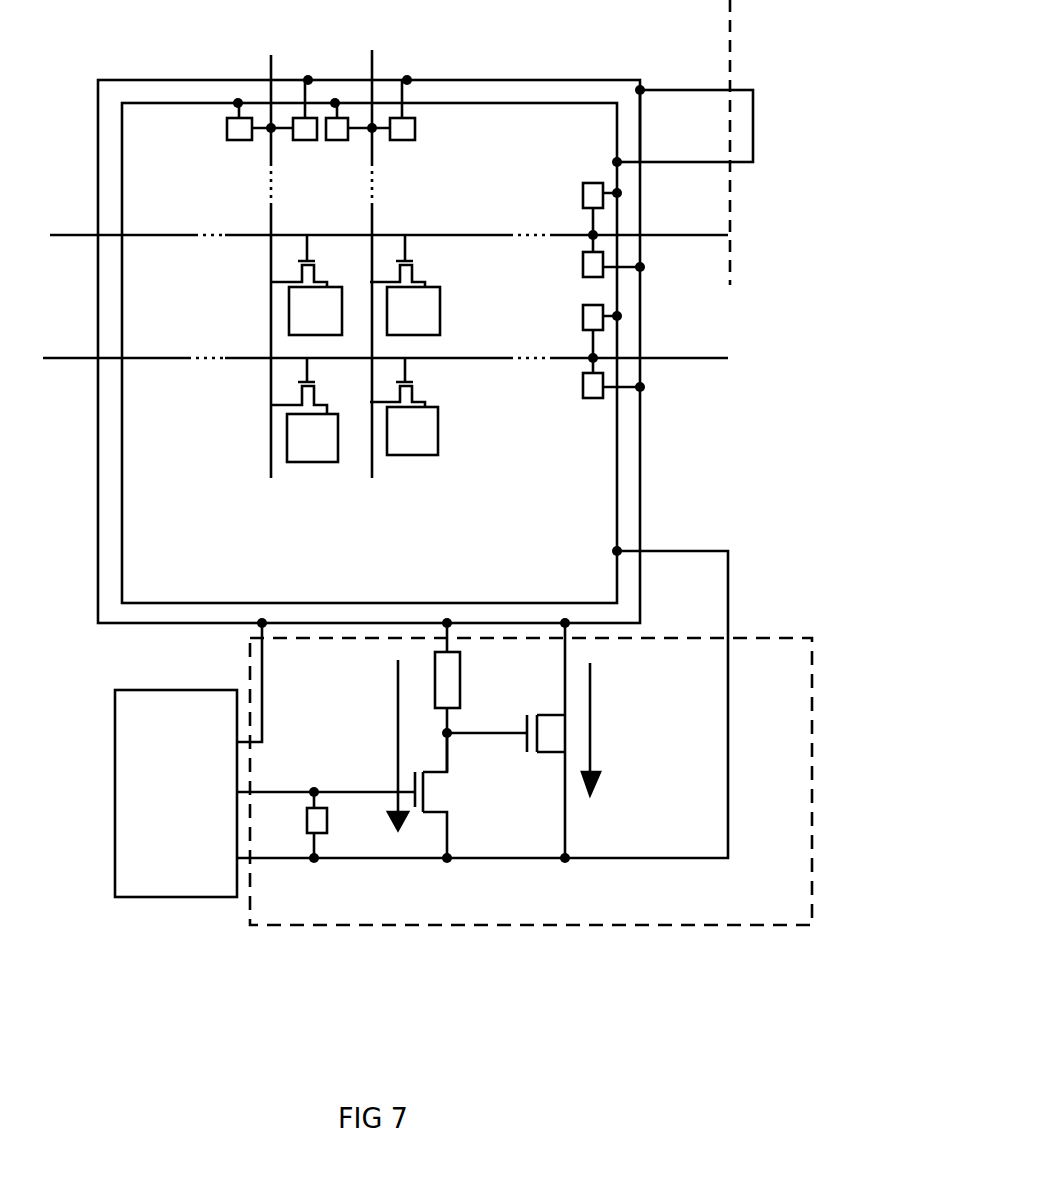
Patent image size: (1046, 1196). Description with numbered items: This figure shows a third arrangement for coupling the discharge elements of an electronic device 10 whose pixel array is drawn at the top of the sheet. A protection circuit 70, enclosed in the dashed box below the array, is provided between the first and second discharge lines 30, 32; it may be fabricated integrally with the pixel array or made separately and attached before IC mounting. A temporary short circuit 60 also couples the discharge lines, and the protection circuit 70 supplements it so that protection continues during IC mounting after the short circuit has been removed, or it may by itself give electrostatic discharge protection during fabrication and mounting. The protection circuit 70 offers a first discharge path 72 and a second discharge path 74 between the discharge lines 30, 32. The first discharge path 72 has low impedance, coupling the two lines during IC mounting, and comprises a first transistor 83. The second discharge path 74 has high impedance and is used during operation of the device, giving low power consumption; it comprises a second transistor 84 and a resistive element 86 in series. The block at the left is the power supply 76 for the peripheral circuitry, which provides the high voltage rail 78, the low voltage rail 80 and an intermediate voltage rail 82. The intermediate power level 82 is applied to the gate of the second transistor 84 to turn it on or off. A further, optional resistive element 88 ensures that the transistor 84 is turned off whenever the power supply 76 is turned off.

The electronic device 10 is at (620, 26).
The first discharge line 30 is at (617, 443).
The second discharge line 32 is at (640, 483).
The temporary short circuit 60 is at (753, 135).
The protection circuit 70 is at (558, 927).
The first discharge path 72 is at (590, 727).
The second discharge path 74 is at (397, 702).
The power supply 76 is at (163, 897).
The high voltage rail 78 is at (262, 717).
The low voltage rail 80 is at (427, 812).
The intermediate voltage rail 82 is at (368, 792).
The first transistor 83 is at (550, 755).
The second transistor 84 is at (423, 862).
The resistive element 86 is at (460, 672).
The further resistive element 88 is at (327, 818).